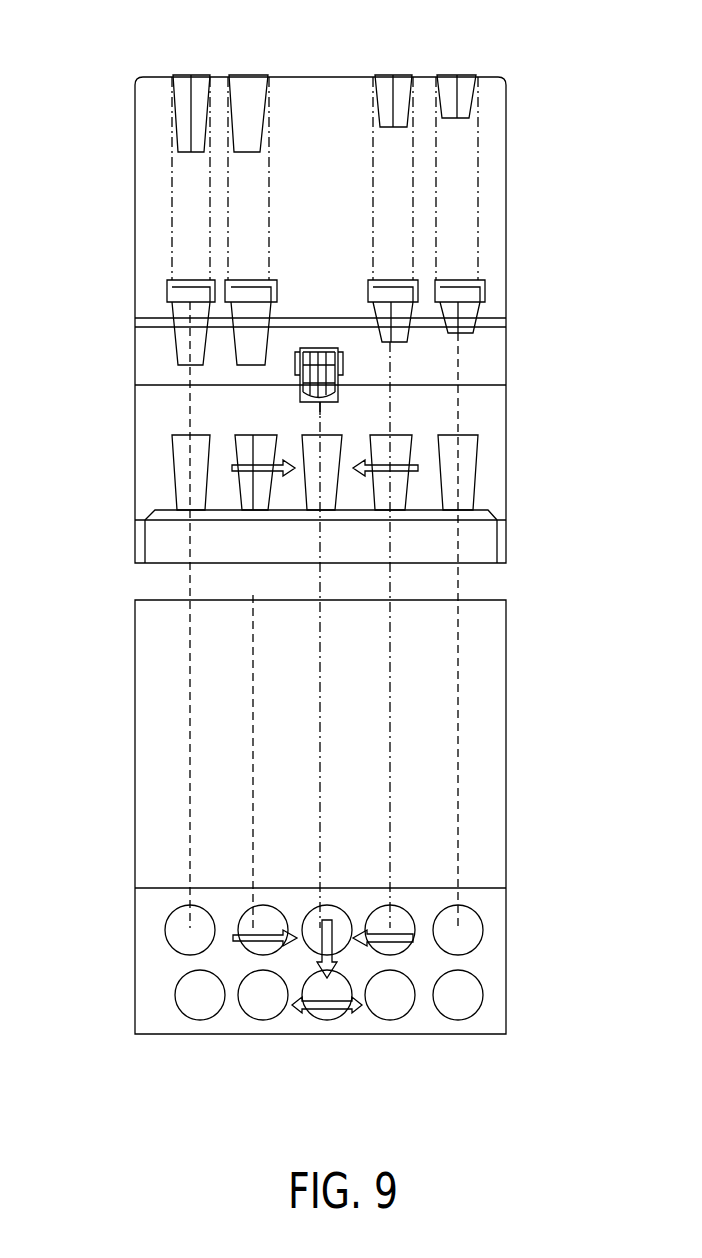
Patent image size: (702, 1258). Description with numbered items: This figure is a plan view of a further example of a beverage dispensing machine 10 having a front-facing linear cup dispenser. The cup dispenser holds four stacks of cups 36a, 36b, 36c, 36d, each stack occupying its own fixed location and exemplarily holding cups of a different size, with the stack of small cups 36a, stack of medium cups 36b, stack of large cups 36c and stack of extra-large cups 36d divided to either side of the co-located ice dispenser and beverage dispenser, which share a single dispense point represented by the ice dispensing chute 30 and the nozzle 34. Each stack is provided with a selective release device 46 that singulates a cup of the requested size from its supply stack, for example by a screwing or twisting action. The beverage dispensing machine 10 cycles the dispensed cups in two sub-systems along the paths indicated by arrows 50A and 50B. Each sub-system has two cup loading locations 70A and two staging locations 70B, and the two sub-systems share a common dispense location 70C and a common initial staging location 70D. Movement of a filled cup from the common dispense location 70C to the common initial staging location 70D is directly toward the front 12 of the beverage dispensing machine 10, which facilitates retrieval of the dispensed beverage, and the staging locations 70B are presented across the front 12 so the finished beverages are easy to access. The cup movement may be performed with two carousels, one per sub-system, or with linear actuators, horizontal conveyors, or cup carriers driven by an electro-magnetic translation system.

The beverage dispensing machine 10 is at (123, 88).
The front 12 is at (353, 1047).
The ice dispensing chute 30 is at (307, 345).
The nozzle 34 is at (335, 345).
The stack of small cups 36a is at (458, 163).
The stack of medium cups 36b is at (383, 138).
The stack of large cups 36c is at (182, 173).
The stack of extra-large cups 36d is at (258, 163).
The selective release device 46 is at (198, 276).
The arrow 50A is at (350, 957).
The arrow 50B is at (298, 957).
The cup loading location 70A is at (250, 900).
The staging location 70B is at (407, 905).
The common dispense location 70C is at (337, 890).
The common initial staging location 70D is at (323, 1036).